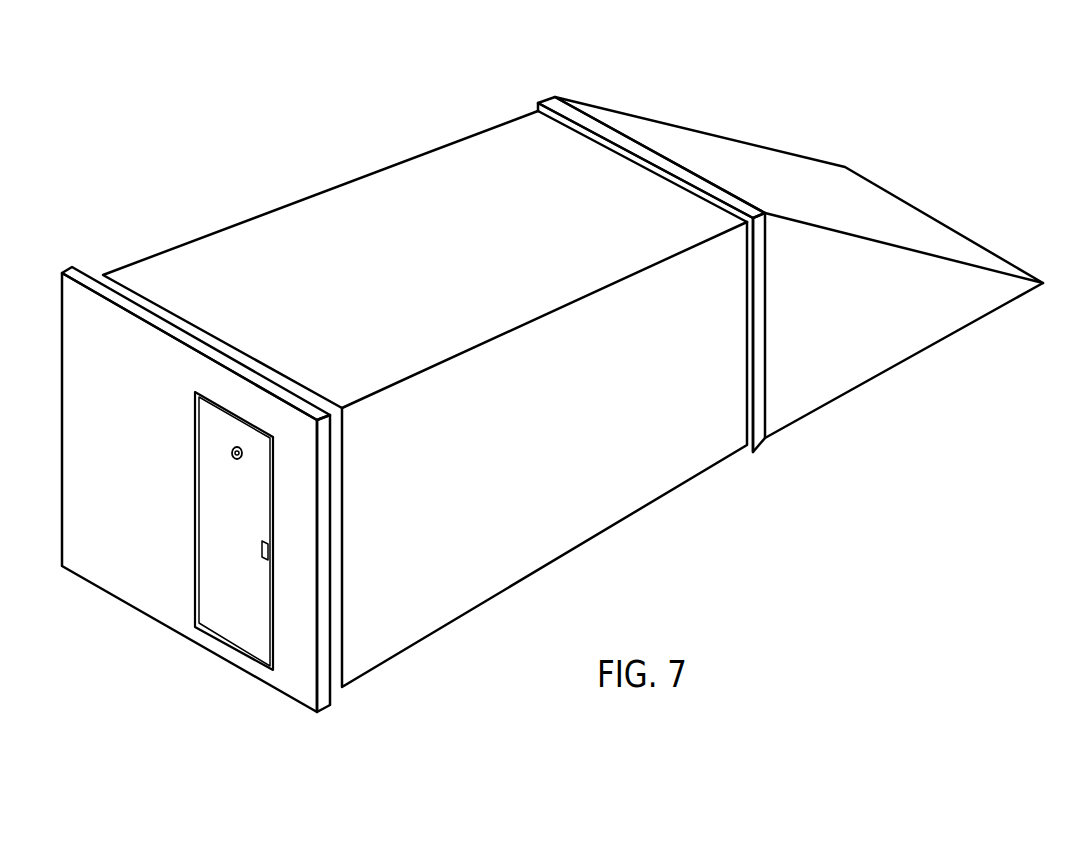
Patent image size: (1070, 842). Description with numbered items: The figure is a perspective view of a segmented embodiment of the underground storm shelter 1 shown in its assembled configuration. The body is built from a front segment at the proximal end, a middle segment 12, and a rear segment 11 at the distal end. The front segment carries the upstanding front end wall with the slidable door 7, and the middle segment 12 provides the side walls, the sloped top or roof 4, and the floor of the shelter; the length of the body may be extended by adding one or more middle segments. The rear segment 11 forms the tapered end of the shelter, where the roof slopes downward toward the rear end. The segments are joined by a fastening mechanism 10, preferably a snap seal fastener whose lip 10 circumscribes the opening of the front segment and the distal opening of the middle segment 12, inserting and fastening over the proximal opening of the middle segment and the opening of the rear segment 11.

The underground storm shelter 1 is at (176, 148).
The sloped top or roof 4 is at (347, 210).
The slidable door 7 is at (237, 625).
The fastening mechanism 10 is at (105, 276).
The rear segment 11 is at (557, 107).
The middle segment 12 is at (650, 470).